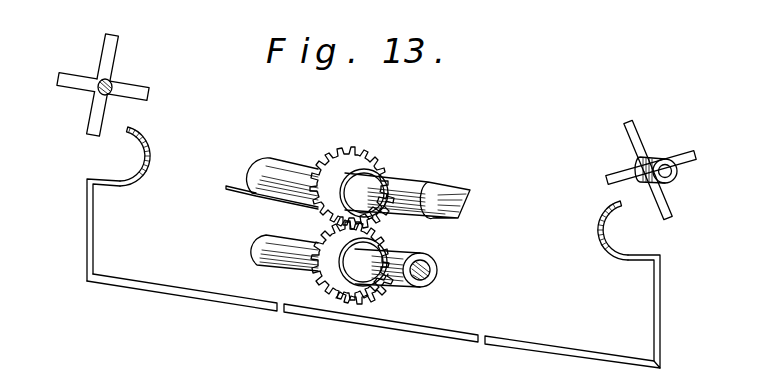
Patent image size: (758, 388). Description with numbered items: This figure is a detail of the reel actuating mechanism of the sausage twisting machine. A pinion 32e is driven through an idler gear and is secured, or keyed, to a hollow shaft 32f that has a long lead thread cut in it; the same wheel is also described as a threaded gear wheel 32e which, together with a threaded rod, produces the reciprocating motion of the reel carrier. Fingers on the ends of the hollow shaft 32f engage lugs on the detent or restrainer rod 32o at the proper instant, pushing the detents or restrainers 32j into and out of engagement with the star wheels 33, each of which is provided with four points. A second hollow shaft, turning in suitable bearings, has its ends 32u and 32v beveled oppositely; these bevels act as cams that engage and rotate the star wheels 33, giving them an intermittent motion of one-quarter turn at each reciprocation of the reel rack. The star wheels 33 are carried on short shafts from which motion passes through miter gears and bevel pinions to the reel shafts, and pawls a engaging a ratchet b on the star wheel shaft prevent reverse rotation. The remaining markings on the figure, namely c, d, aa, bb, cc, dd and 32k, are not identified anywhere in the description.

The detent or restrainer rod 32o is at (398, 328).
The detents or restrainers 32j is at (135, 127).
The star wheels 33 is at (381, 125).
The pawls a is at (86, 135).
The ratchet b is at (135, 91).
The arm of cross c is at (103, 49).
The arm of cross d is at (55, 81).
The arm of cross aa is at (670, 218).
The arm of cross bb is at (698, 161).
The arm of cross cc is at (628, 121).
The arm of cross dd is at (607, 179).
The gear 32k is at (351, 149).
The pinion (threaded gear wheel) 32e is at (357, 232).
The beveled end of hollow shaft 32v is at (468, 192).
The beveled end of hollow shaft 32u is at (243, 191).
The hollow shaft 32f is at (404, 287).